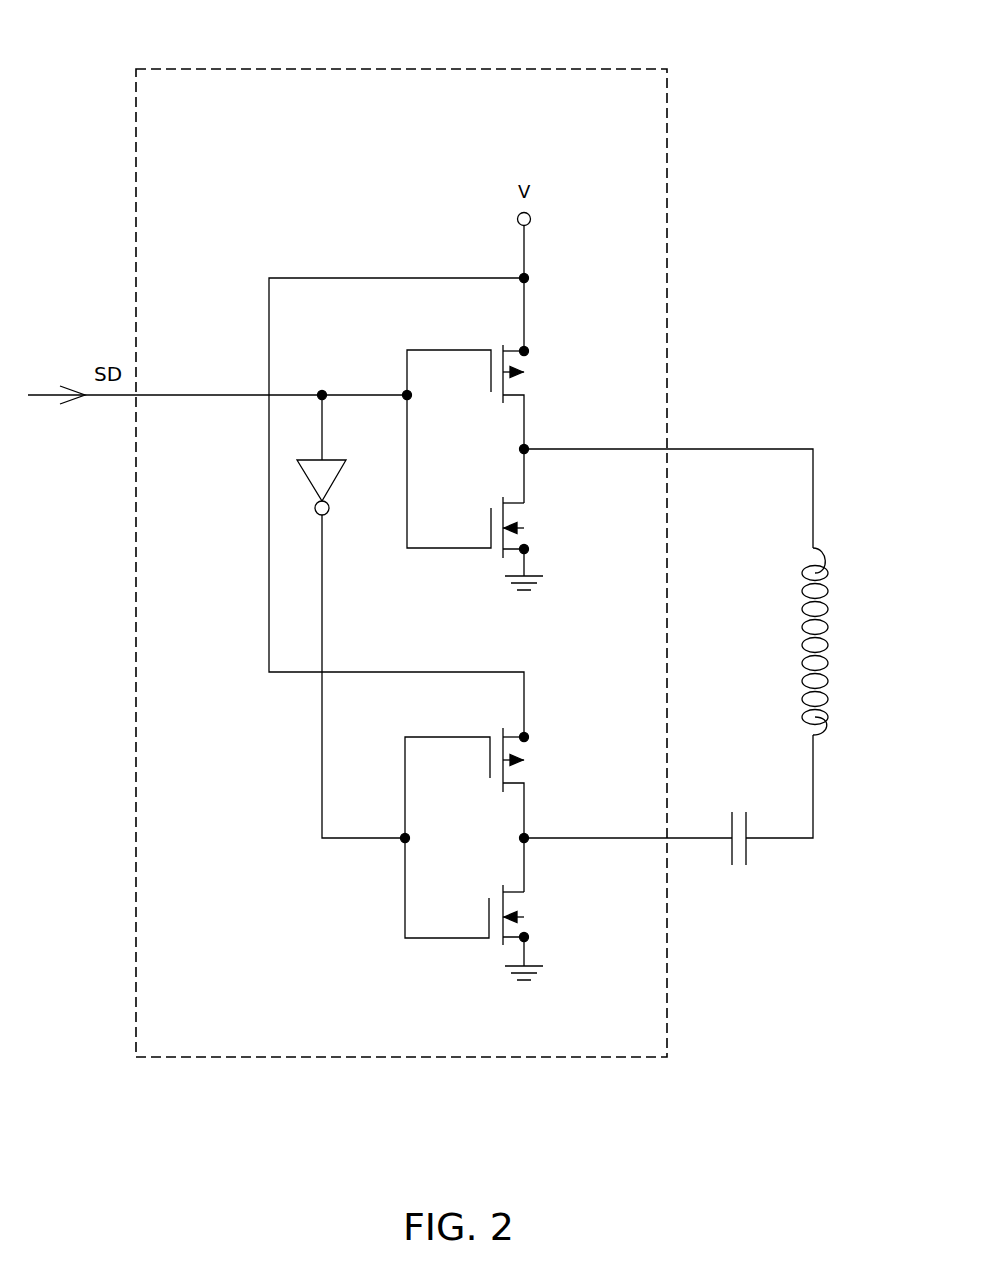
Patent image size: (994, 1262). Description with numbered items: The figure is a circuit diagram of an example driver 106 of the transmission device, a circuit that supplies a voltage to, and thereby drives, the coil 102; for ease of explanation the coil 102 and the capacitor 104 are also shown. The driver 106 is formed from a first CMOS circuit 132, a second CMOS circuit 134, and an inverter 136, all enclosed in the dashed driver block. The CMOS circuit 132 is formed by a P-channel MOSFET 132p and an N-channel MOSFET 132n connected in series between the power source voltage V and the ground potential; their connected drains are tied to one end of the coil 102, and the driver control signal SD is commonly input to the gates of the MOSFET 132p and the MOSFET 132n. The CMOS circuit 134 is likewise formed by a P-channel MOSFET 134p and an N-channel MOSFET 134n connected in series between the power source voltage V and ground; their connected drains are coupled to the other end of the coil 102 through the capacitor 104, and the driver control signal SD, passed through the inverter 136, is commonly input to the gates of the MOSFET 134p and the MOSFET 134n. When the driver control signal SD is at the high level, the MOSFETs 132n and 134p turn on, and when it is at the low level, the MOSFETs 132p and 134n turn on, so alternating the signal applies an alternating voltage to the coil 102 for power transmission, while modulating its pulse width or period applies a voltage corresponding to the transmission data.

The coil 102 is at (800, 635).
The capacitor 104 is at (738, 872).
The driver 106 is at (510, 69).
The CMOS circuit 132 is at (510, 458).
The P-channel MOSFET 132p is at (497, 347).
The N-channel MOSFET 132n is at (498, 555).
The CMOS circuit 134 is at (494, 813).
The P-channel MOSFET 134p is at (490, 728).
The N-channel MOSFET 134n is at (493, 948).
The inverter 136 is at (335, 484).